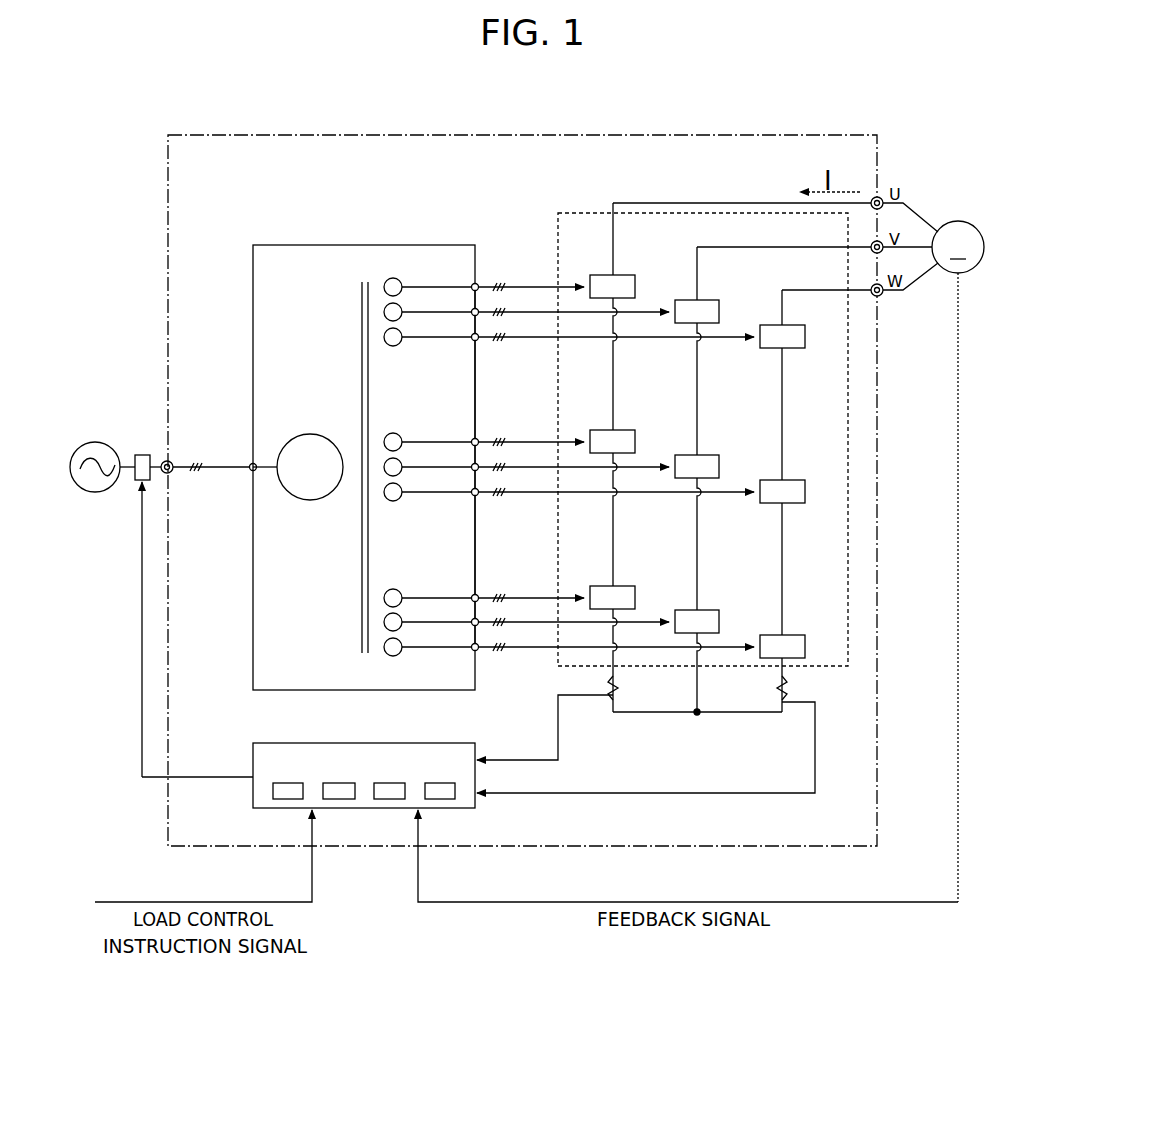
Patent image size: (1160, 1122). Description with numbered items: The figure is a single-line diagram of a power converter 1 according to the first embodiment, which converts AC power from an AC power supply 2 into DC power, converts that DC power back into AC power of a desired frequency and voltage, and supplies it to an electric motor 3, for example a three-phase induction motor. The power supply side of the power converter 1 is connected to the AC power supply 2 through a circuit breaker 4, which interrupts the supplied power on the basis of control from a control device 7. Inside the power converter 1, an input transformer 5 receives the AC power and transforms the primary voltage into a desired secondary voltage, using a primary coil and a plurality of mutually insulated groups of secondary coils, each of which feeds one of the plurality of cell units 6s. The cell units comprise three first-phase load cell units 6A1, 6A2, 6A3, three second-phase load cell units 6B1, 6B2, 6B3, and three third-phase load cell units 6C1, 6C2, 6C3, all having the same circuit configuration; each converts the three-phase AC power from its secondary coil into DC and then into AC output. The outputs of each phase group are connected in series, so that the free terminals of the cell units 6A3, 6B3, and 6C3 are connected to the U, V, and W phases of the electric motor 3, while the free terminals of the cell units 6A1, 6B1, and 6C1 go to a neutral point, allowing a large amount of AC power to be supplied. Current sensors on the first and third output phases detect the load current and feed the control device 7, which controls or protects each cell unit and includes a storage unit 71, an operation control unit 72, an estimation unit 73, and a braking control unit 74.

The power converter 1 is at (805, 135).
The AC power supply 2 is at (95, 442).
The electric motor 3 is at (958, 221).
The circuit breaker 4 is at (142, 455).
The input transformer 5 is at (432, 245).
The cell units 6s is at (677, 476).
The first-phase load cell unit 6A1 is at (622, 586).
The first-phase load cell unit 6A2 is at (622, 430).
The first-phase load cell unit 6A3 is at (622, 275).
The second-phase load cell unit 6B1 is at (712, 610).
The second-phase load cell unit 6B2 is at (712, 455).
The second-phase load cell unit 6B3 is at (712, 300).
The third-phase load cell unit 6C1 is at (790, 635).
The third-phase load cell unit 6C2 is at (795, 480).
The third-phase load cell unit 6C3 is at (790, 348).
The control device 7 is at (366, 798).
The storage unit 71 is at (288, 799).
The operation control unit 72 is at (339, 799).
The estimation unit 73 is at (389, 799).
The braking control unit 74 is at (440, 799).